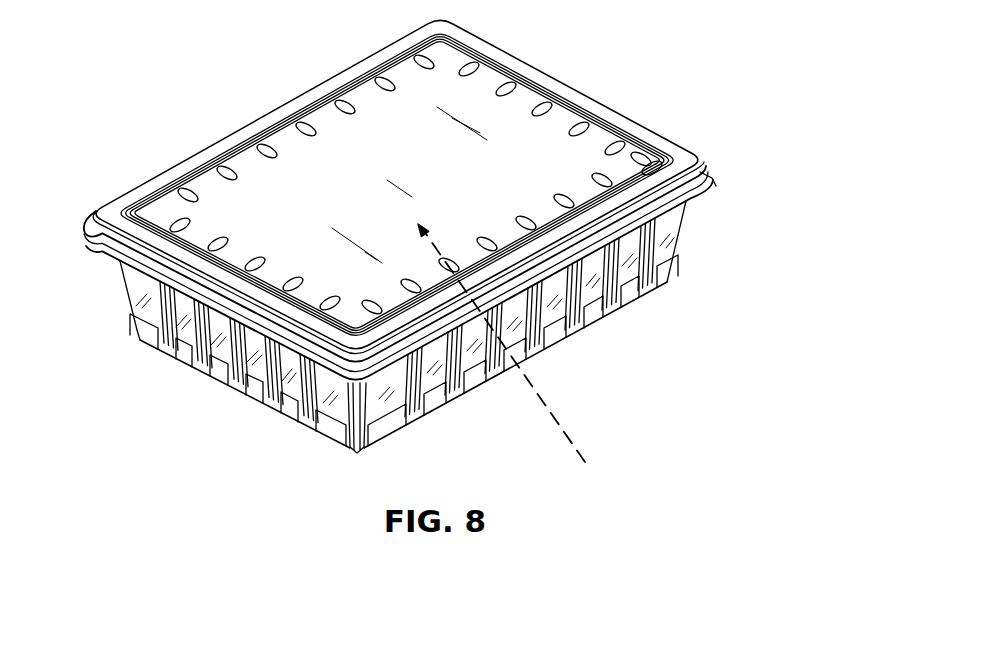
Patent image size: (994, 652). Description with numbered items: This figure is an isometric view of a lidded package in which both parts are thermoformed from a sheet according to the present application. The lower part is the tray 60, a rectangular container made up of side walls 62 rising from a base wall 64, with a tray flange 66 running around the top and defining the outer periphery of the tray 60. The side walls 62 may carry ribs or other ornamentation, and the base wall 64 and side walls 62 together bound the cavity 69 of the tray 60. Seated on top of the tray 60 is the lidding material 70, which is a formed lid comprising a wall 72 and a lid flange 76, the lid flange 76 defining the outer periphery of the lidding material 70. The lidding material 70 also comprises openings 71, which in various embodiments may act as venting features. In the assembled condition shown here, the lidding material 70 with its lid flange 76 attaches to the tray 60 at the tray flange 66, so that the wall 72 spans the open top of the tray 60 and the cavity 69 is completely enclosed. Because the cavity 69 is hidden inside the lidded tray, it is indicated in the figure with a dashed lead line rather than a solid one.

The tray 60 is at (431, 328).
The side walls 62 is at (215, 362).
The base wall 64 is at (438, 412).
The tray flange 66 is at (713, 181).
The cavity 69 is at (516, 360).
The lidding material 70 is at (379, 186).
The openings 71 is at (172, 163).
The wall 72 is at (380, 116).
The lid flange 76 is at (710, 180).